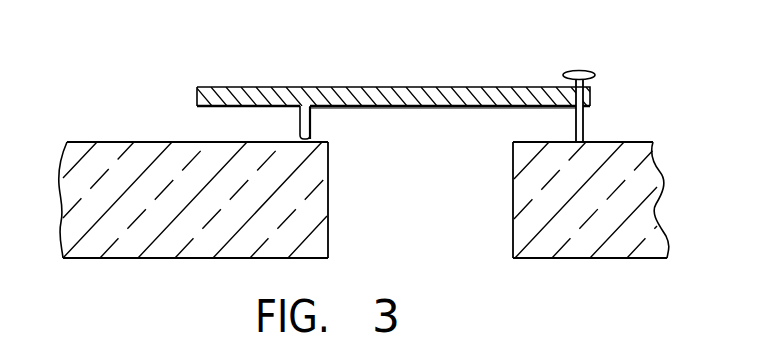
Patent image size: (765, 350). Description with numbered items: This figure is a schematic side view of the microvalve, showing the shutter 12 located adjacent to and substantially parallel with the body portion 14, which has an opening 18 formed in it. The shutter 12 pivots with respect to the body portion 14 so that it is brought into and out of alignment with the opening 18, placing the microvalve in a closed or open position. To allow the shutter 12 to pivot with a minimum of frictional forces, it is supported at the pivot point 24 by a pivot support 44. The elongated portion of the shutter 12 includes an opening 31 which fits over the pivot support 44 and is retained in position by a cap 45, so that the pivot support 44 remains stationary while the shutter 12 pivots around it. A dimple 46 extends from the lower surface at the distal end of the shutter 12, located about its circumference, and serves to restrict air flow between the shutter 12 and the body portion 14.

The shutter 12 is at (276, 87).
The body portion 14 is at (657, 208).
The opening 18 is at (513, 251).
The pivot point 24 is at (594, 32).
The opening 31 is at (577, 108).
The pivot support 44 is at (583, 128).
The cap 45 is at (590, 70).
The dimple 46 is at (299, 125).